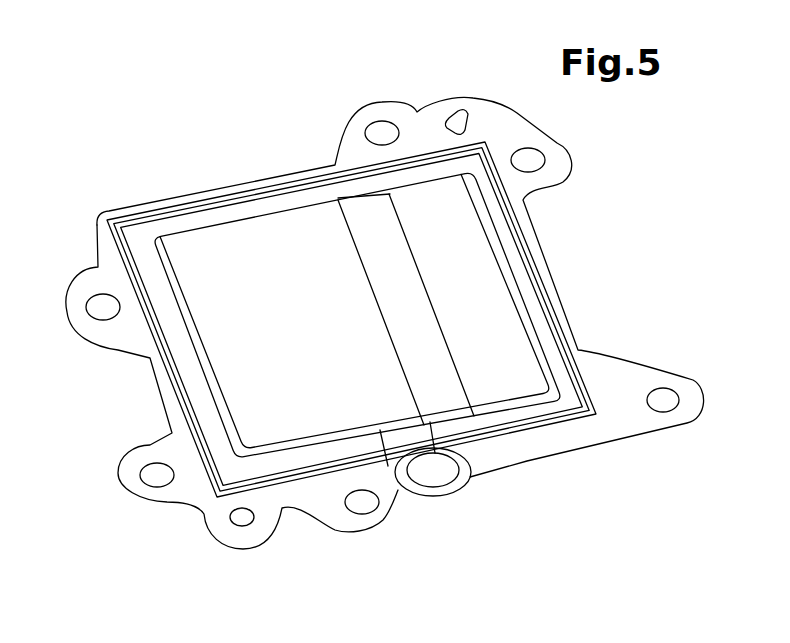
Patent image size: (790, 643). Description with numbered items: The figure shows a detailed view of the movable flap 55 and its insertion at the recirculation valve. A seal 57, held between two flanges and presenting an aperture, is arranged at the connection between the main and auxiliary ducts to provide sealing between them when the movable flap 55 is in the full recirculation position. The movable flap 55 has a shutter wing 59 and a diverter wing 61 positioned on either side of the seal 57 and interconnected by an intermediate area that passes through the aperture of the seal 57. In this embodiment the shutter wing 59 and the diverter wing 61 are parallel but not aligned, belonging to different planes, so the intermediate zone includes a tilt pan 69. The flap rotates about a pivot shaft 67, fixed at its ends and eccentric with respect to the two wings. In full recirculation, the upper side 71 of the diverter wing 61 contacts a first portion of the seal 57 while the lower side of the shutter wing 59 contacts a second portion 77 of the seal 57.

The movable flap 55 is at (271, 252).
The seal 57 is at (224, 478).
The shutter wing 59 is at (222, 331).
The diverter wing 61 is at (460, 258).
The pivot shaft 67 is at (433, 473).
The tilt pan 69 is at (440, 370).
The upper side of the diverter wing 71 is at (503, 340).
The second portion of the seal 77 is at (143, 263).